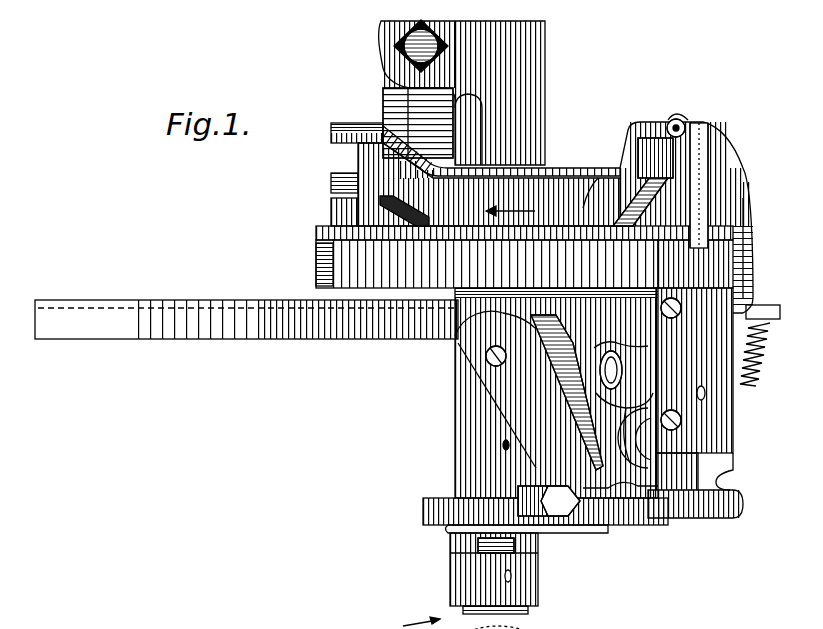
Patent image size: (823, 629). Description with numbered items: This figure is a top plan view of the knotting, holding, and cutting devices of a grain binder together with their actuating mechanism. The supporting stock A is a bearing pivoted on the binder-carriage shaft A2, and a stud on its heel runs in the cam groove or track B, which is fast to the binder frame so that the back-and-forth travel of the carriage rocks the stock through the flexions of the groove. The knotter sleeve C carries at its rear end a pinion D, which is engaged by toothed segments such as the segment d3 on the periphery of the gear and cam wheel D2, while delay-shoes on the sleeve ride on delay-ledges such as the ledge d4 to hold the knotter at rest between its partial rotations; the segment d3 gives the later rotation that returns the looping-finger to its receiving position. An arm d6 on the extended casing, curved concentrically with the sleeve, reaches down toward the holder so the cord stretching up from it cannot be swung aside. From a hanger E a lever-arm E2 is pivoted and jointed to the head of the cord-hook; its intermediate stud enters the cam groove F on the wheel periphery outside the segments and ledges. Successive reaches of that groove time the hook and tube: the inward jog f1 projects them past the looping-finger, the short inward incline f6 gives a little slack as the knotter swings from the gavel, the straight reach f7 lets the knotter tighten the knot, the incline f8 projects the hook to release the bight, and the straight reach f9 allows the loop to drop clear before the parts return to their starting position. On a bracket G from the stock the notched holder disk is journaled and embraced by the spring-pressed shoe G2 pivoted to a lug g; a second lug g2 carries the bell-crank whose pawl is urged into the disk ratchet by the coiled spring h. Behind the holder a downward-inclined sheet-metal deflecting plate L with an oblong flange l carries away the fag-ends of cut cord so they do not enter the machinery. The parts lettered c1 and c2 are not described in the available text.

The short inward incline f6 is at (356, 146).
The straight reach f7 is at (323, 182).
The inward incline f8 is at (386, 196).
The straight reach f9 is at (521, 204).
The inward jog or reach f1 is at (599, 193).
The cam groove or track F is at (568, 182).
The delay-ledge d4 is at (310, 225).
The segment d3 is at (308, 262).
The gear and cam wheel D2 is at (487, 264).
The pinion D is at (695, 264).
The cam groove or track B is at (165, 320).
The supporting stock or bearing A is at (545, 410).
The binder-carriage shaft A2 is at (503, 576).
The deflecting plate or shoe L is at (495, 389).
The oblong flange l is at (567, 392).
The lug g2 is at (623, 369).
The bracket G is at (628, 438).
The spring-pressed shoe G2 is at (620, 498).
The lug g is at (541, 496).
The standard C is at (694, 389).
The arm d6 is at (695, 504).
The coiled spring h is at (760, 347).
The hanger E is at (745, 205).
The lever-arm E2 is at (670, 112).
The roller c1 is at (655, 158).
The rod c2 is at (700, 185).